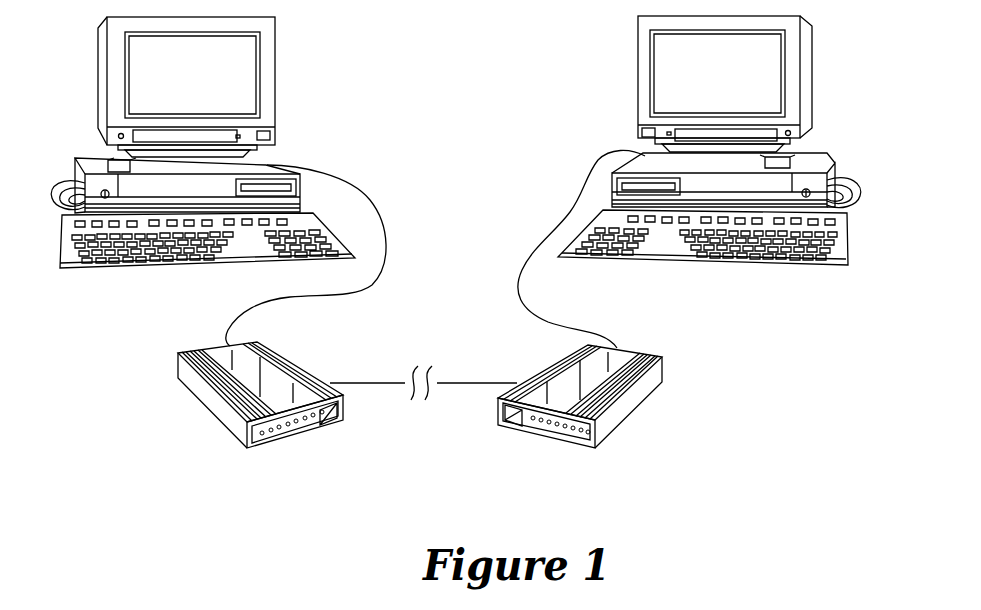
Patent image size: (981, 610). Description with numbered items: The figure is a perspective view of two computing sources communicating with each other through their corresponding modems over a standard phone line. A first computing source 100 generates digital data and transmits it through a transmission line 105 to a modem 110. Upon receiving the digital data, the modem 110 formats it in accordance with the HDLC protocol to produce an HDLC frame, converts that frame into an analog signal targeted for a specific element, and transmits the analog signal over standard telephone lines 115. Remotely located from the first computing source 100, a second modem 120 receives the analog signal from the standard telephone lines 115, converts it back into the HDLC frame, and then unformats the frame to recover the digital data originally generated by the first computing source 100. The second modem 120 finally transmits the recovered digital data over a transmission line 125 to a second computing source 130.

The first computing source 100 is at (75, 143).
The transmission line 105 is at (334, 174).
The modem 110 is at (278, 437).
The standard telephone lines 115 is at (332, 383).
The second modem 120 is at (615, 418).
The transmission line 125 is at (578, 190).
The second computing source 130 is at (830, 118).